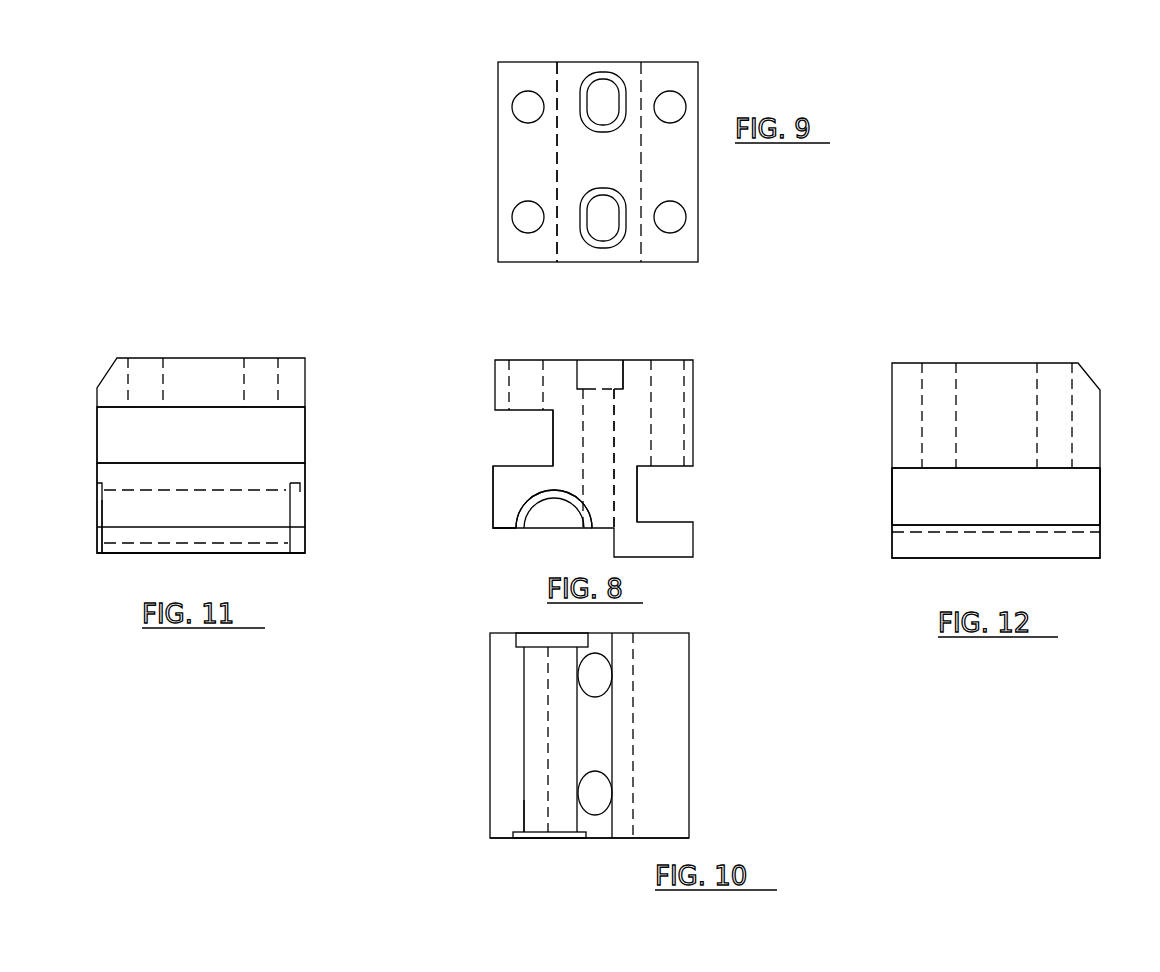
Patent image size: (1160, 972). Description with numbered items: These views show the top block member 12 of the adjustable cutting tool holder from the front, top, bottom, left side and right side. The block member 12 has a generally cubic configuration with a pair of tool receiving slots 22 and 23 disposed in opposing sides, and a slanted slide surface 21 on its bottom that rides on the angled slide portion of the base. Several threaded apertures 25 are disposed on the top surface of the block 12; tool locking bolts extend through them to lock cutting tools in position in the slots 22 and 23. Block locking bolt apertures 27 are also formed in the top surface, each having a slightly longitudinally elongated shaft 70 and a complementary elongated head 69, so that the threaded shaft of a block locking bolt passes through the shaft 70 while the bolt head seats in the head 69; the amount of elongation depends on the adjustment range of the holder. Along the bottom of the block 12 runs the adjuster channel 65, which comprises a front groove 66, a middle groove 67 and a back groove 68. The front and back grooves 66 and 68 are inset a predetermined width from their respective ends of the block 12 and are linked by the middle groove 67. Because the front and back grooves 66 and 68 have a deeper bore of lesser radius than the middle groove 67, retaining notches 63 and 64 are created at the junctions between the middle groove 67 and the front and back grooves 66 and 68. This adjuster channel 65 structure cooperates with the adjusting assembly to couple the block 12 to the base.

In FIG. 9, the block member 12 is at (480, 66).
In FIG. 8, the block member 12 is at (717, 352).
In FIG. 10, the block member 12 is at (710, 636).
In FIG. 11, the block member 12 is at (107, 330).
In FIG. 12, the block member 12 is at (1080, 338).
In FIG. 8, the slanted slide surface 21 is at (495, 545).
In FIG. 10, the slanted slide surface 21 is at (460, 838).
In FIG. 11, the slanted slide surface 21 is at (127, 562).
In FIG. 12, the slanted slide surface 21 is at (1095, 568).
In FIG. 8, the tool receiving slot 22 is at (637, 505).
In FIG. 10, the tool receiving slot 22 is at (633, 742).
In FIG. 12, the tool receiving slot 22 is at (985, 510).
In FIG. 8, the tool receiving slot 23 is at (553, 428).
In FIG. 11, the tool receiving slot 23 is at (198, 447).
In FIG. 9, the threaded apertures 25 is at (514, 114).
In FIG. 8, the threaded apertures 25 is at (528, 360).
In FIG. 11, the threaded apertures 25 is at (150, 362).
In FIG. 12, the threaded apertures 25 is at (943, 370).
In FIG. 9, the block locking bolt apertures 27 is at (600, 188).
In FIG. 8, the block locking bolt apertures 27 is at (597, 356).
In FIG. 10, the retaining notch 63 is at (520, 830).
In FIG. 11, the retaining notch 63 is at (100, 518).
In FIG. 8, the retaining notch 64 is at (540, 490).
In FIG. 10, the retaining notch 64 is at (525, 650).
In FIG. 11, the retaining notch 64 is at (268, 535).
In FIG. 8, the adjuster channel 65 is at (546, 534).
In FIG. 10, the adjuster channel 65 is at (510, 710).
In FIG. 11, the adjuster channel 65 is at (75, 552).
In FIG. 10, the front groove 66 is at (535, 838).
In FIG. 11, the front groove 66 is at (99, 483).
In FIG. 8, the middle groove 67 is at (573, 503).
In FIG. 10, the middle groove 67 is at (520, 780).
In FIG. 11, the middle groove 67 is at (268, 490).
In FIG. 8, the back groove 68 is at (520, 508).
In FIG. 10, the back groove 68 is at (543, 640).
In FIG. 11, the back groove 68 is at (300, 497).
In FIG. 9, the elongated head 69 is at (596, 80).
In FIG. 8, the elongated head 69 is at (623, 380).
In FIG. 9, the elongated shaft 70 is at (612, 80).
In FIG. 8, the elongated shaft 70 is at (614, 421).
In FIG. 10, the elongated shaft 70 is at (612, 677).